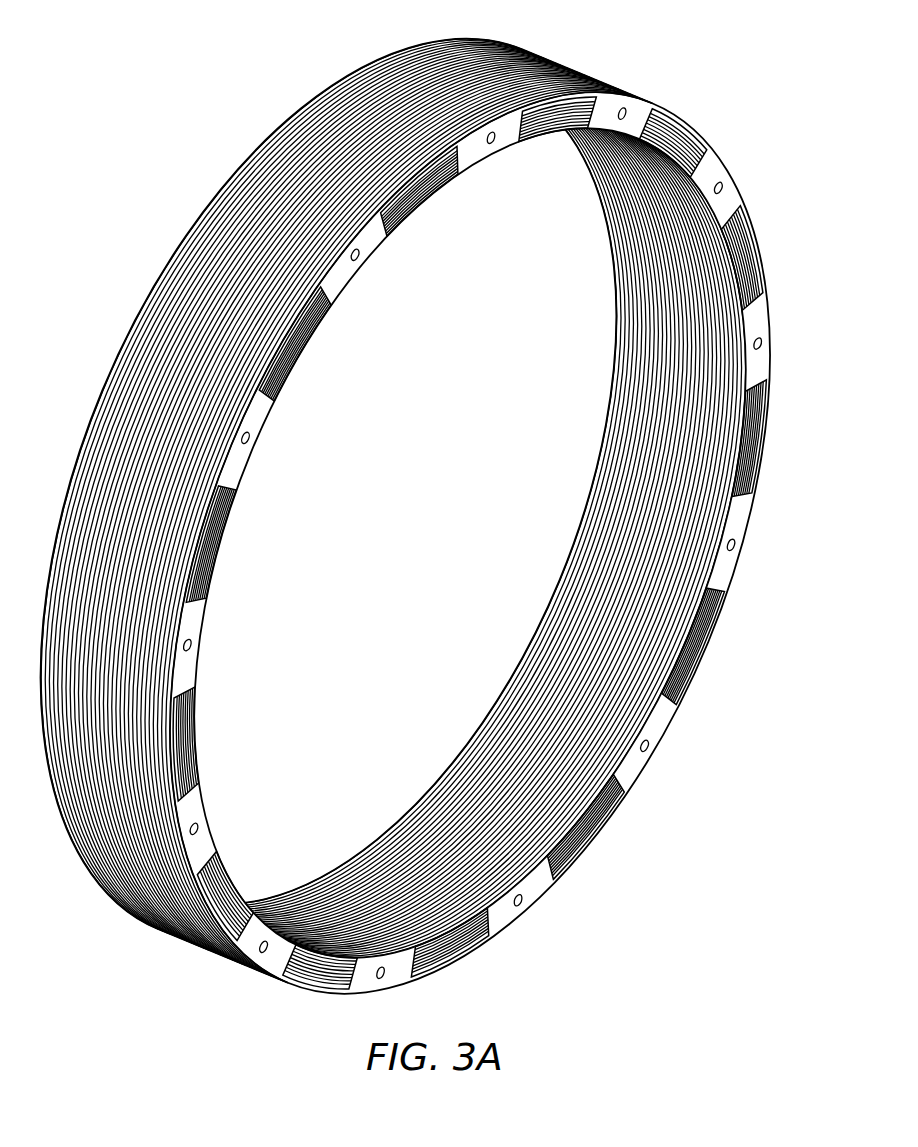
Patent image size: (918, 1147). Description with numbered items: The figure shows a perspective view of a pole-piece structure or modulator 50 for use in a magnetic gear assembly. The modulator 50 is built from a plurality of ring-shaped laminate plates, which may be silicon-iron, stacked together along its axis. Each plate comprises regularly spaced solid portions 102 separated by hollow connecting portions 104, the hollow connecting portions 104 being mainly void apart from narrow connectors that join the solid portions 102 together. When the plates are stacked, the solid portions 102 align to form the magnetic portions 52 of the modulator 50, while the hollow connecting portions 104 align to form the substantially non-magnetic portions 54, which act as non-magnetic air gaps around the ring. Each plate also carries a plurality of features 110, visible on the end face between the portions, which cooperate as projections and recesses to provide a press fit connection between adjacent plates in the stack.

The modulator 50 is at (449, 544).
The magnetic portions 52 is at (760, 322).
The solid portions 102 is at (753, 372).
The substantially non-magnetic portions 54 is at (760, 424).
The hollow connecting portions 104 is at (744, 470).
The features 110 is at (244, 419).